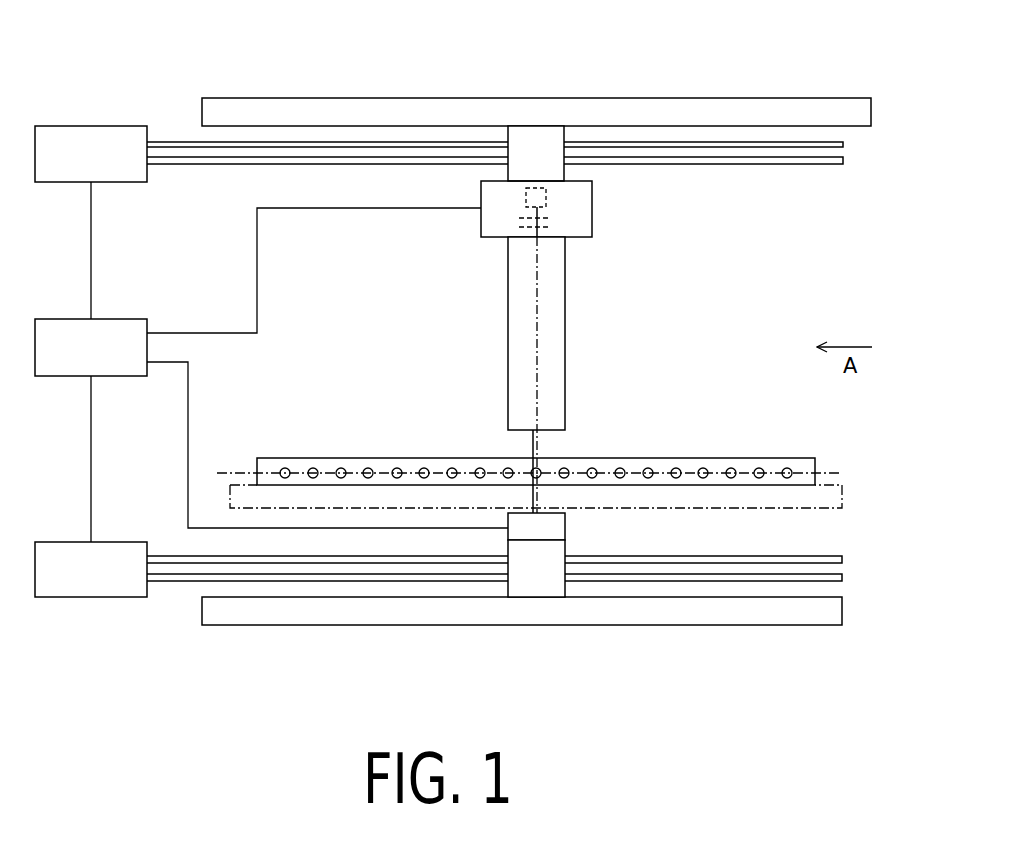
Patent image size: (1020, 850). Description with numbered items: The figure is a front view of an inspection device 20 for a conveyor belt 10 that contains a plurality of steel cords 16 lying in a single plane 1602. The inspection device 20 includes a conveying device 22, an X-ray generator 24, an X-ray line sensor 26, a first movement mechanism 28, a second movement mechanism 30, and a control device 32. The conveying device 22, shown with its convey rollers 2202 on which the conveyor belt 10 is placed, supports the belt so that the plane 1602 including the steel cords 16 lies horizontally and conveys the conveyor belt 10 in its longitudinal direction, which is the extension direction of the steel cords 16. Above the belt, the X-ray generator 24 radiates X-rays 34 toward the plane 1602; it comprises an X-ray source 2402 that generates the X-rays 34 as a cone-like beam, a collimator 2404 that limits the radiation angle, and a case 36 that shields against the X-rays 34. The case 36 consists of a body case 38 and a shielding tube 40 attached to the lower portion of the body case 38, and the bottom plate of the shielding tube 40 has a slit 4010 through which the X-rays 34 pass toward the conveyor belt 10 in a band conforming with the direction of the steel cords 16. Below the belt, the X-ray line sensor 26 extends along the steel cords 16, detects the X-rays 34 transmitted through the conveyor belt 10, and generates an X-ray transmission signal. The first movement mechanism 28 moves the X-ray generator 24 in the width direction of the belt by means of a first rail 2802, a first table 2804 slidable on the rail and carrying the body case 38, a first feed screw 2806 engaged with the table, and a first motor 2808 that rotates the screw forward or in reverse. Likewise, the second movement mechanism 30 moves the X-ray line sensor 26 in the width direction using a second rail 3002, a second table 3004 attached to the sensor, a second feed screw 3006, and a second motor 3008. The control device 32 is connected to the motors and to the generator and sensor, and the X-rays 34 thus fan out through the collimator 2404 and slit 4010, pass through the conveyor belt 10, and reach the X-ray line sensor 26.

The conveyor belt 10 is at (710, 440).
The steel cords 16 is at (373, 465).
The plane 1602 is at (829, 470).
The inspection device 20 is at (206, 63).
The conveying device 22 is at (547, 521).
The convey rollers 2202 is at (712, 508).
The X-ray generator 24 is at (598, 212).
The X-ray source 2402 is at (550, 197).
The collimator 2404 is at (555, 222).
The X-ray line sensor 26 is at (568, 530).
The first movement mechanism 28 is at (450, 90).
The first rail 2802 is at (700, 97).
The first table 2804 is at (565, 134).
The first feed screw 2806 is at (793, 165).
The first motor 2808 is at (91, 126).
The second movement mechanism 30 is at (507, 630).
The second rail 3002 is at (722, 627).
The second table 3004 is at (568, 583).
The second feed screw 3006 is at (845, 582).
The second motor 3008 is at (63, 598).
The control device 32 is at (120, 318).
The X-rays 34 is at (540, 365).
The case 36 is at (425, 360).
The body case 38 is at (475, 232).
The shielding tube 40 is at (504, 337).
The slit 4010 is at (543, 412).